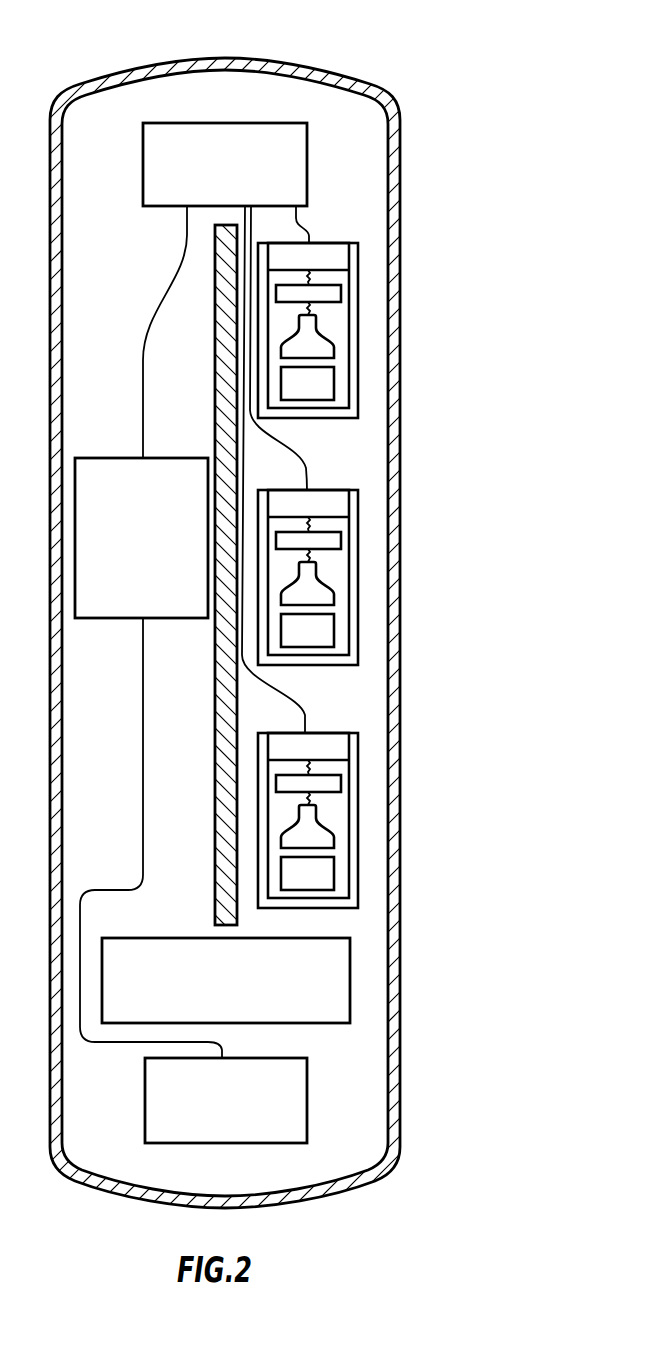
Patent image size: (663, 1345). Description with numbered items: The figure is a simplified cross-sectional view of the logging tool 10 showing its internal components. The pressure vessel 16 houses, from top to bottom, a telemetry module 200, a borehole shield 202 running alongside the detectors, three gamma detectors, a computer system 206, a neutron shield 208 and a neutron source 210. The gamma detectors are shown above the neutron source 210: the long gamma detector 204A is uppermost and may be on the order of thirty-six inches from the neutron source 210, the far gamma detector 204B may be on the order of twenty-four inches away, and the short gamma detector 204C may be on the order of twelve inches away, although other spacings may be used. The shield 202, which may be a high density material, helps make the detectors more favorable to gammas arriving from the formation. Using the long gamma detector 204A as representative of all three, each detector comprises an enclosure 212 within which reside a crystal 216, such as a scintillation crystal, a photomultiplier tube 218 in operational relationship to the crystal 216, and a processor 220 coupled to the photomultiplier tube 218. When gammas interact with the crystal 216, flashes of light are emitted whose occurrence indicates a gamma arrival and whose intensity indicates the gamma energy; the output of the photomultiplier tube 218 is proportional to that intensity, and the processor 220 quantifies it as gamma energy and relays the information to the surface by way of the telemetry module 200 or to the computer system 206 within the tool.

The logging tool 10 is at (511, 101).
The pressure vessel 16 is at (400, 250).
The telemetry module 200 is at (162, 206).
The borehole shield 202 is at (215, 338).
The long gamma detector 204A is at (298, 330).
The far gamma detector 204B is at (359, 573).
The short gamma detector 204C is at (359, 815).
The computer system 206 is at (123, 580).
The neutron shield 208 is at (350, 962).
The neutron source 210 is at (307, 1092).
The enclosure 212 is at (350, 300).
The crystal 216 is at (325, 388).
The photomultiplier tube 218 is at (334, 353).
The processor 220 is at (276, 291).